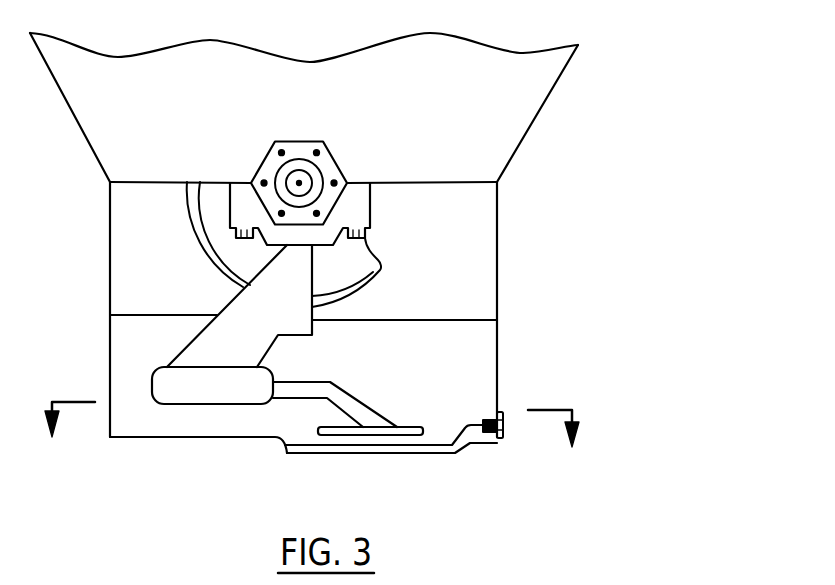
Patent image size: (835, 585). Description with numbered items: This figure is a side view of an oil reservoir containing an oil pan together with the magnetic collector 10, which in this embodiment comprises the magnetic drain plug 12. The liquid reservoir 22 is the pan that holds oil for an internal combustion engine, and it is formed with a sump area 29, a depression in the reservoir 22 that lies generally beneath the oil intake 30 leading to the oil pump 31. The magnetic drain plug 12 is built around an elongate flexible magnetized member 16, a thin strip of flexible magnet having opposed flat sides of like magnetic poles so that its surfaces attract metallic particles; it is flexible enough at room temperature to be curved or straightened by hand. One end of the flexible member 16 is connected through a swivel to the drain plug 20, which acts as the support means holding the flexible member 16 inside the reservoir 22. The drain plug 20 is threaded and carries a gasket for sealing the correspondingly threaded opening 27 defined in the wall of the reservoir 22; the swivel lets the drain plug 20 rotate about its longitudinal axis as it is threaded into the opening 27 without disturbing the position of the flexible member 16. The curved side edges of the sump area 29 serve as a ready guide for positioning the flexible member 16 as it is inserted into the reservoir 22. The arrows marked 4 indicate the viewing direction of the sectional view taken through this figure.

The magnetic collector 10 is at (515, 442).
The magnetic drain plug 12 is at (432, 455).
The flexible magnetized member 16 is at (352, 448).
The drain plug 20 is at (500, 440).
The liquid reservoir 22 is at (497, 293).
The threaded opening 27 is at (497, 408).
The sump area 29 is at (290, 455).
The oil intake 30 is at (412, 426).
The oil pump 31 is at (160, 390).
The section line 4- 4 is at (313, 425).